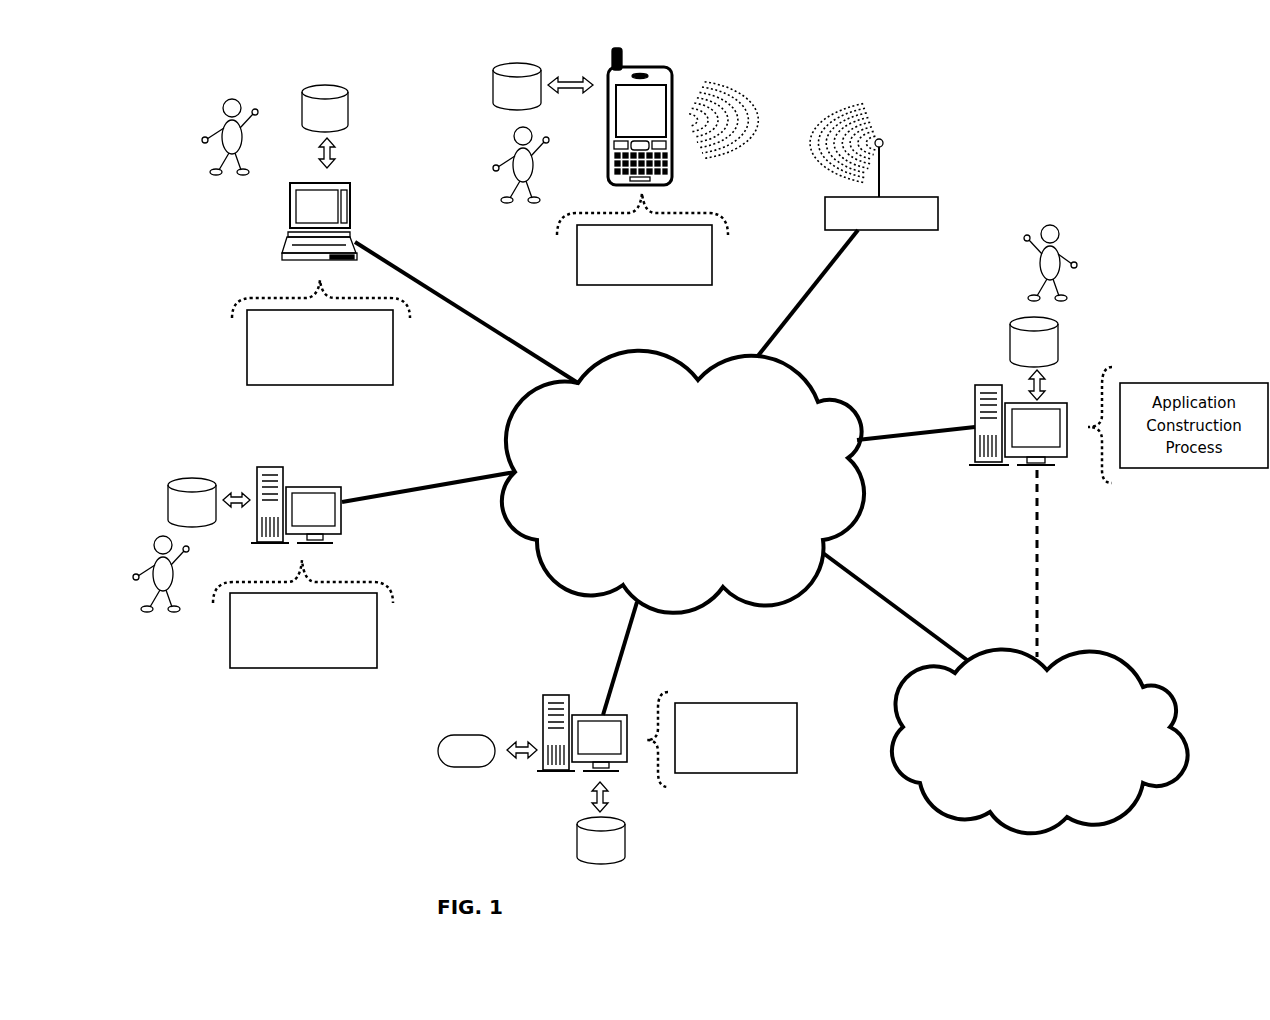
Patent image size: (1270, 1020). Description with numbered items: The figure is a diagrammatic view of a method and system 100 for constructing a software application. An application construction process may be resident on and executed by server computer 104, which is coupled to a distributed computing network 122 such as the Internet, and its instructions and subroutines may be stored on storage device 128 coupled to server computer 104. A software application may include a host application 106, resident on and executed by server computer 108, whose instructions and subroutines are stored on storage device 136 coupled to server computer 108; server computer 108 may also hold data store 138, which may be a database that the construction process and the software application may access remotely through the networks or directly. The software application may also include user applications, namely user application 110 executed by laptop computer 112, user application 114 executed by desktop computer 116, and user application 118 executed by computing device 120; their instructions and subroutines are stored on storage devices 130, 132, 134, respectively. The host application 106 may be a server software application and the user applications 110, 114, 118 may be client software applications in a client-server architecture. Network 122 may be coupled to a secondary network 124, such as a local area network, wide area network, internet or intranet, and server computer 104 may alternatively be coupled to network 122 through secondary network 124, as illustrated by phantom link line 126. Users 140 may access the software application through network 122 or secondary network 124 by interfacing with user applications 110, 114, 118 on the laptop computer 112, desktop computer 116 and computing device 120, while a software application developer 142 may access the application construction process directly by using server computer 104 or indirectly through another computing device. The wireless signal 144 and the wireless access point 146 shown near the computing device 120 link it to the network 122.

The method and system 100 is at (1157, 42).
The server computer 104 is at (973, 407).
The host application 106 is at (797, 742).
The server computer 108 is at (545, 722).
The user application 110 is at (393, 350).
The laptop computer 112 is at (350, 192).
The user application 114 is at (377, 633).
The desktop computer 116 is at (343, 508).
The user application 118 is at (712, 277).
The computing device 120 is at (683, 70).
The distributed computing network 122 is at (683, 482).
The secondary network 124 is at (1040, 741).
The phantom link line 126 is at (1033, 493).
The storage device 128 is at (1034, 342).
The storage device 130 is at (325, 108).
The storage device 132 is at (192, 502).
The storage device 134 is at (517, 86).
The storage device 136 is at (601, 840).
The data store 138 is at (466, 751).
The users 140 is at (207, 110).
The software application developer 142 is at (1020, 260).
The wireless signal 144 is at (768, 95).
The wireless access point 146 is at (825, 210).